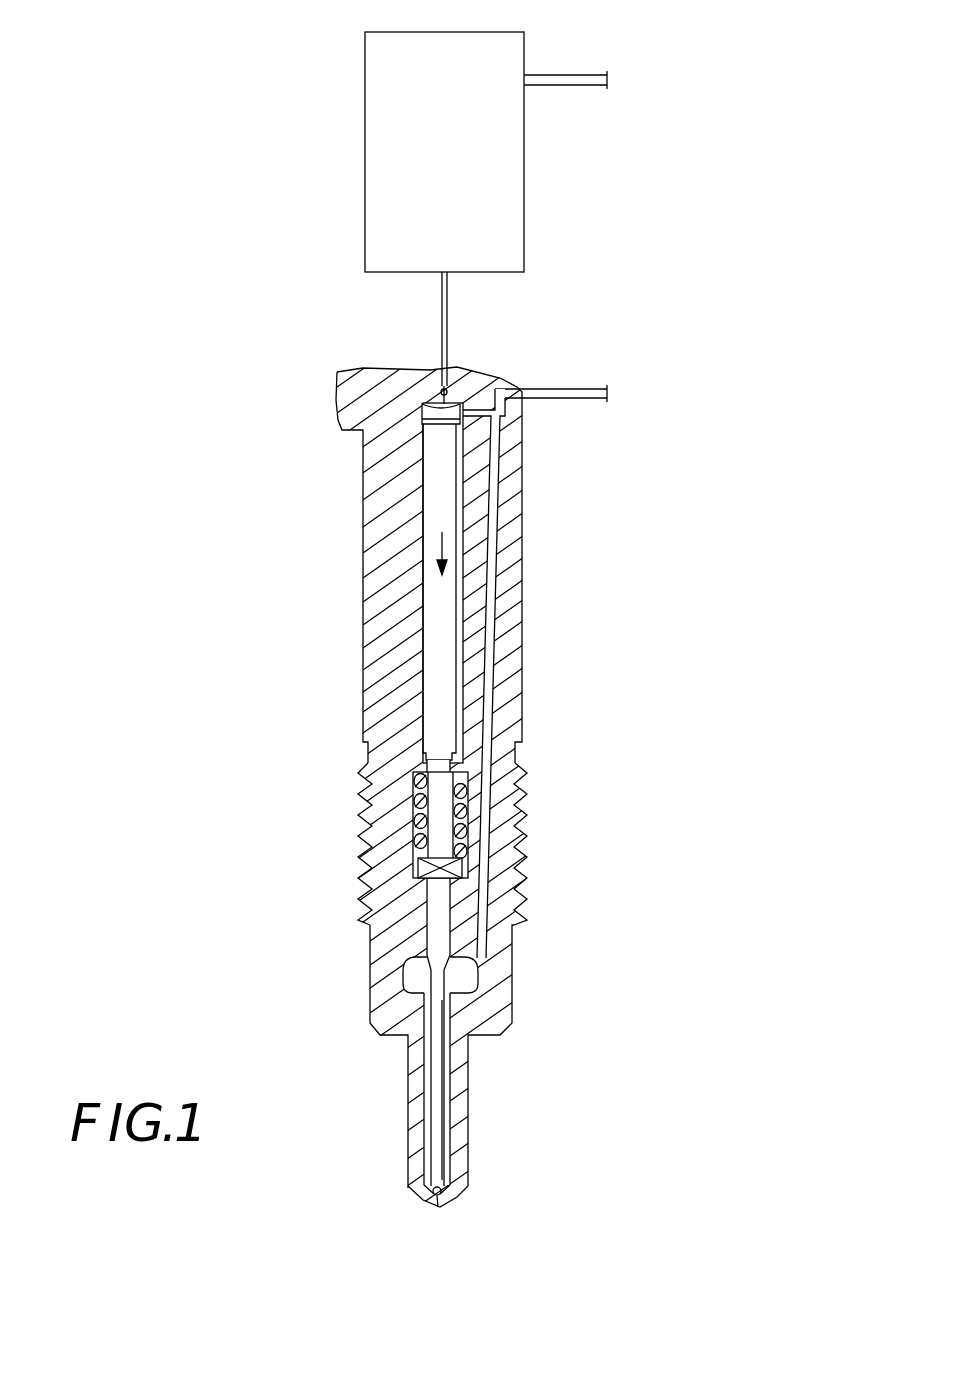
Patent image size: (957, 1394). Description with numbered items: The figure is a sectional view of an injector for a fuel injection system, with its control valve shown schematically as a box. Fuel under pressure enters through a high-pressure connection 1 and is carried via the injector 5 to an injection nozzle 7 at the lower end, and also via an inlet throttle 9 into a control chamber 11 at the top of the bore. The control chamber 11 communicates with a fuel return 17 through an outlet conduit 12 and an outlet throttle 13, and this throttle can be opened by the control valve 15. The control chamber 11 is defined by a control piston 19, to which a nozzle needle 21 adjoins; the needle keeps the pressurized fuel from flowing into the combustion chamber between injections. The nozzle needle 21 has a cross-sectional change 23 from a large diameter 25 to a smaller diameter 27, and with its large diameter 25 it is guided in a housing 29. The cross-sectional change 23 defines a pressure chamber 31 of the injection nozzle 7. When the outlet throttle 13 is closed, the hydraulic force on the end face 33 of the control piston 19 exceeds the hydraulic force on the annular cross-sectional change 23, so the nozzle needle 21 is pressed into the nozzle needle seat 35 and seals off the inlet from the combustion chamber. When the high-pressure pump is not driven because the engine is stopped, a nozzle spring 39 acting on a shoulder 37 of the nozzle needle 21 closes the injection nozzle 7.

The high-pressure connection 1 is at (600, 396).
The injector 5 is at (497, 583).
The injection nozzle 7 is at (480, 1206).
The inlet throttle 9 is at (483, 422).
The control chamber 11 is at (426, 413).
The outlet conduit 12 is at (441, 318).
The outlet throttle 13 is at (461, 386).
The control valve 15 is at (460, 141).
The fuel return 17 is at (576, 73).
The control piston 19 is at (442, 697).
The nozzle needle 21 is at (440, 1135).
The cross-sectional change 23 is at (432, 964).
The large diameter 25 is at (445, 933).
The smaller diameter 27 is at (447, 1067).
The housing 29 is at (392, 902).
The pressure chamber 31 is at (470, 975).
The end face 33 is at (427, 458).
The nozzle needle seat 35 is at (426, 1195).
The shoulder 37 is at (463, 868).
The nozzle spring 39 is at (418, 822).